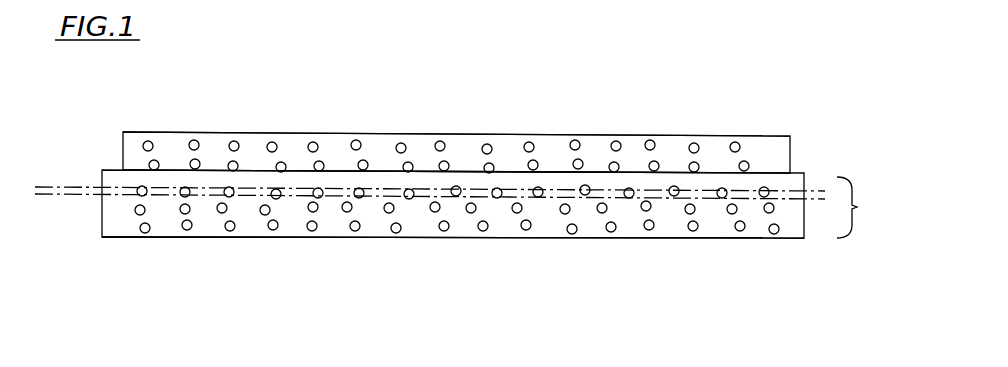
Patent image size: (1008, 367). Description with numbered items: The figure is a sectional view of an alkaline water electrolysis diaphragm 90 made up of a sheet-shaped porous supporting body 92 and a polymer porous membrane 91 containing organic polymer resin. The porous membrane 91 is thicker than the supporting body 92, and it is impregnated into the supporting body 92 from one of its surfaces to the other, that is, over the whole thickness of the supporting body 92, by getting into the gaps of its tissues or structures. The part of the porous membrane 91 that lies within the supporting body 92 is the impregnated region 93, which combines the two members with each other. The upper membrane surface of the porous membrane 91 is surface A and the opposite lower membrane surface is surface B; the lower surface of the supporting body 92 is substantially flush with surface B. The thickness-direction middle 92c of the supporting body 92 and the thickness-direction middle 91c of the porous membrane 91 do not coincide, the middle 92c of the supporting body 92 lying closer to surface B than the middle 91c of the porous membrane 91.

The alkaline water electrolysis diaphragm 90 is at (677, 103).
The porous membrane 91 is at (790, 143).
The supporting body 92 is at (805, 240).
The impregnated region 93 is at (857, 207).
The thickness-direction middle of the porous membrane 91c is at (62, 186).
The thickness-direction middle of the supporting body 92c is at (60, 205).
The surface A is at (215, 133).
The surface B is at (215, 238).